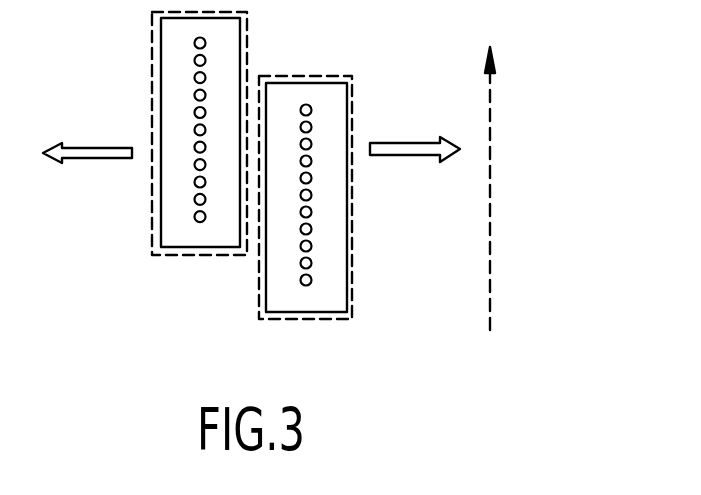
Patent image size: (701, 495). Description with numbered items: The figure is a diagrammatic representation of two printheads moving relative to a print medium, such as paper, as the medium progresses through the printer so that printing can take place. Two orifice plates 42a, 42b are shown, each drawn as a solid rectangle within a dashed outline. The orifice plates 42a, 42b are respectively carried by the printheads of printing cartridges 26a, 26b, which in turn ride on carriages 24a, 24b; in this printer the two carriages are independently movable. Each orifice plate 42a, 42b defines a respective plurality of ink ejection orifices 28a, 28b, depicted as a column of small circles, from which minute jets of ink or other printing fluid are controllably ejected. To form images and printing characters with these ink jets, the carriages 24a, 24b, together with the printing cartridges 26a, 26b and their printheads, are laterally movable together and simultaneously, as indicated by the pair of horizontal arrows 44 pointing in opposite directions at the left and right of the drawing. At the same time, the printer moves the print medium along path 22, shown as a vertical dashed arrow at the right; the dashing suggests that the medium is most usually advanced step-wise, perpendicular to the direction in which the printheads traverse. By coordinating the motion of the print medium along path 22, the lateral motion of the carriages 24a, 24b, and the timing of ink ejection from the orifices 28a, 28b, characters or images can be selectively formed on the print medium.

The print medium path 22 is at (491, 164).
The first carriage 24a is at (151, 72).
The second carriage 24b is at (351, 75).
The first printing cartridge 26a is at (184, 172).
The second printing cartridge 26b is at (347, 209).
The first plurality of ink ejection orifices 28a is at (206, 60).
The second plurality of ink ejection orifices 28b is at (312, 212).
The first orifice plate 42a is at (160, 27).
The second orifice plate 42b is at (346, 101).
The lateral movement arrows 44 is at (100, 158).